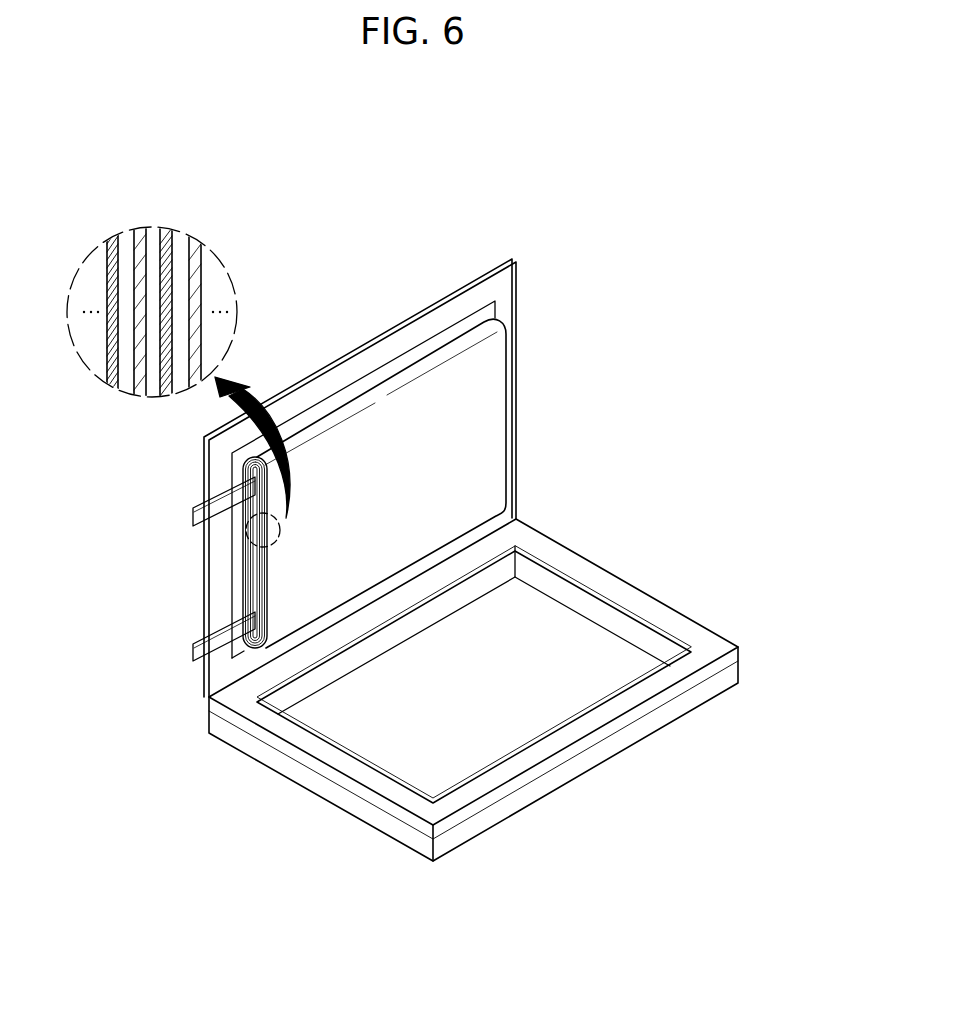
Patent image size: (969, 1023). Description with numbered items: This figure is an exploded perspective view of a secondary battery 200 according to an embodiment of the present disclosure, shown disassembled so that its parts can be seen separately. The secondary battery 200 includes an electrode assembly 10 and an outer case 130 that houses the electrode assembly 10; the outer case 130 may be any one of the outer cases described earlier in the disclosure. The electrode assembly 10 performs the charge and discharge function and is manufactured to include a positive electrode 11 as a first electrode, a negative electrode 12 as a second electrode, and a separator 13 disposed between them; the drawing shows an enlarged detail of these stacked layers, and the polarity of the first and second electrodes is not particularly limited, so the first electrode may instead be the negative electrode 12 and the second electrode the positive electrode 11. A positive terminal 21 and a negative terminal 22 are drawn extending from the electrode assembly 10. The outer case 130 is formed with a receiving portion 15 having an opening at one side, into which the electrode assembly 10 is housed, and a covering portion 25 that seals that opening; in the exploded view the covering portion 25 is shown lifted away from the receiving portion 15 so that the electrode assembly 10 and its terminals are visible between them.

The secondary battery 200 is at (444, 156).
The outer case 130 is at (690, 528).
The electrode assembly 10 is at (520, 420).
The positive electrode 11 is at (164, 235).
The negative electrode 12 is at (193, 243).
The separator 13 is at (149, 232).
The receiving portion 15 is at (738, 671).
The positive terminal 21 is at (193, 518).
The negative terminal 22 is at (193, 652).
The covering portion 25 is at (518, 478).